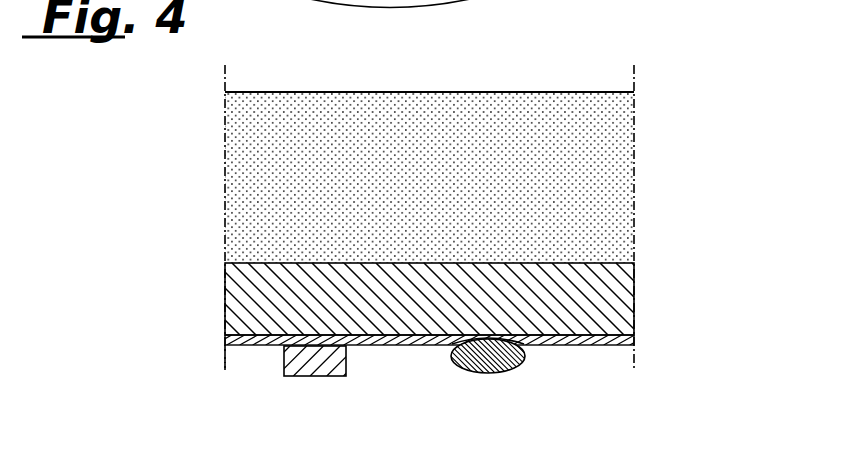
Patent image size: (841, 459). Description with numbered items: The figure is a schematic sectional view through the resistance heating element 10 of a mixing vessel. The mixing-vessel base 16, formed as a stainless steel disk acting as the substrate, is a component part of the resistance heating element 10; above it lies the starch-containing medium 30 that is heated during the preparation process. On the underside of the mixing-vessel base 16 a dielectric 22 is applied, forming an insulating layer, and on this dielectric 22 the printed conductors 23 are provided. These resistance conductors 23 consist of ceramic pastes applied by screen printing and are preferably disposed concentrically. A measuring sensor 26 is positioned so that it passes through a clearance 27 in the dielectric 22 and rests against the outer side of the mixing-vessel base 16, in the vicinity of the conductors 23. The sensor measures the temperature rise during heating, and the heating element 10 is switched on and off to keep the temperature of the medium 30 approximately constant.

The resistance heating element 10 is at (233, 381).
The mixing-vessel base 16 is at (594, 310).
The dielectric 22 is at (390, 343).
The printed conductors 23 is at (306, 364).
The measuring sensor 26 is at (473, 360).
The clearance 27 is at (530, 345).
The starch-containing medium 30 is at (588, 205).